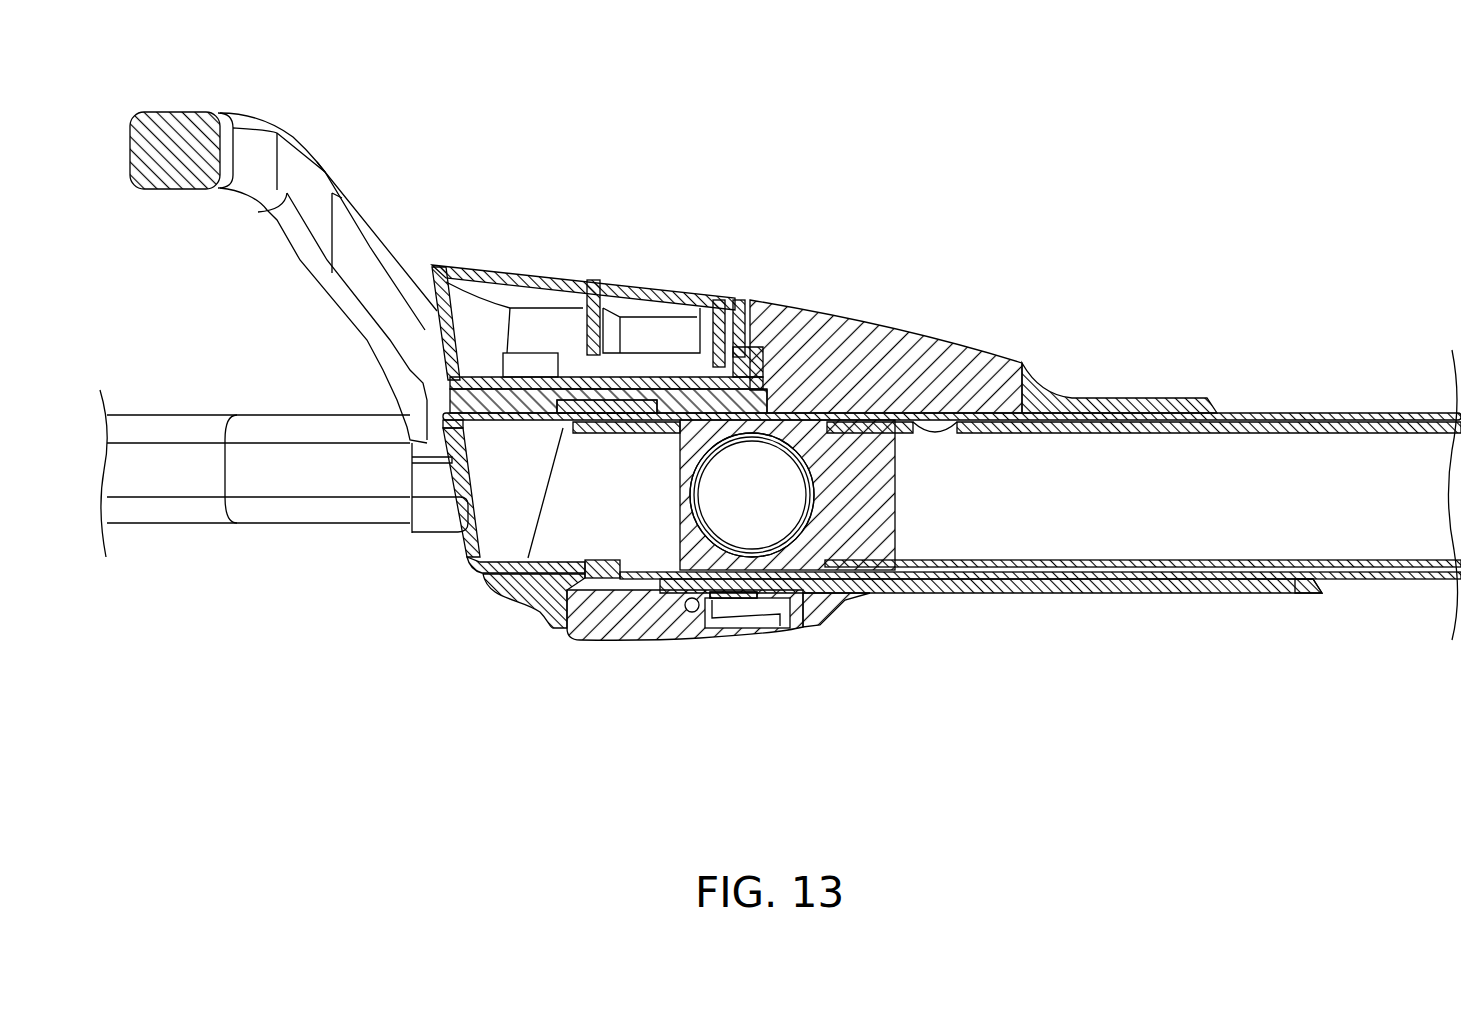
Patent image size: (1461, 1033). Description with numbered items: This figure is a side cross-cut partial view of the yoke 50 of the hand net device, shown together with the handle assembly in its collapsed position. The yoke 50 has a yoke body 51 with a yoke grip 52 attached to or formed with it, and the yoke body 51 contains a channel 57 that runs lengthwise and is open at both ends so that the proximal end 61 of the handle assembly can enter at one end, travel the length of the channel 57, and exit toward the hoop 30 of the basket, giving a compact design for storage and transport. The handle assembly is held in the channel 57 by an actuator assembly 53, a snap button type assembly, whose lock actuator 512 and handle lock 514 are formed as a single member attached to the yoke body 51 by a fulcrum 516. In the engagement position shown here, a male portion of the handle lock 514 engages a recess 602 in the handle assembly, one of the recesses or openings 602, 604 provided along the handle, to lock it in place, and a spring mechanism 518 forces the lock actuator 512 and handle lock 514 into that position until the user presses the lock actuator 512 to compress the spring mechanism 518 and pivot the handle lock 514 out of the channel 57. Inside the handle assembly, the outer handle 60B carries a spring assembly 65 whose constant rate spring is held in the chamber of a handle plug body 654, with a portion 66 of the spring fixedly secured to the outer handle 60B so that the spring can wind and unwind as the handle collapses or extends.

The hoop 30 is at (193, 463).
The yoke 50 is at (812, 195).
The yoke body 51 is at (782, 330).
The yoke grip 52 is at (240, 118).
The actuator assembly 53 is at (562, 660).
The channel 57 is at (1316, 595).
The outer handle 60B is at (1220, 520).
The proximal end 61 is at (460, 492).
The spring assembly 65 is at (760, 537).
The portion of the spring 66 is at (1127, 582).
The lock actuator 512 is at (658, 642).
The handle lock 514 is at (603, 573).
The fulcrum 516 is at (692, 612).
The spring mechanism 518 is at (737, 607).
The recess 602 is at (573, 567).
The mounting plate 604 is at (937, 433).
The handle plug body 654 is at (840, 462).